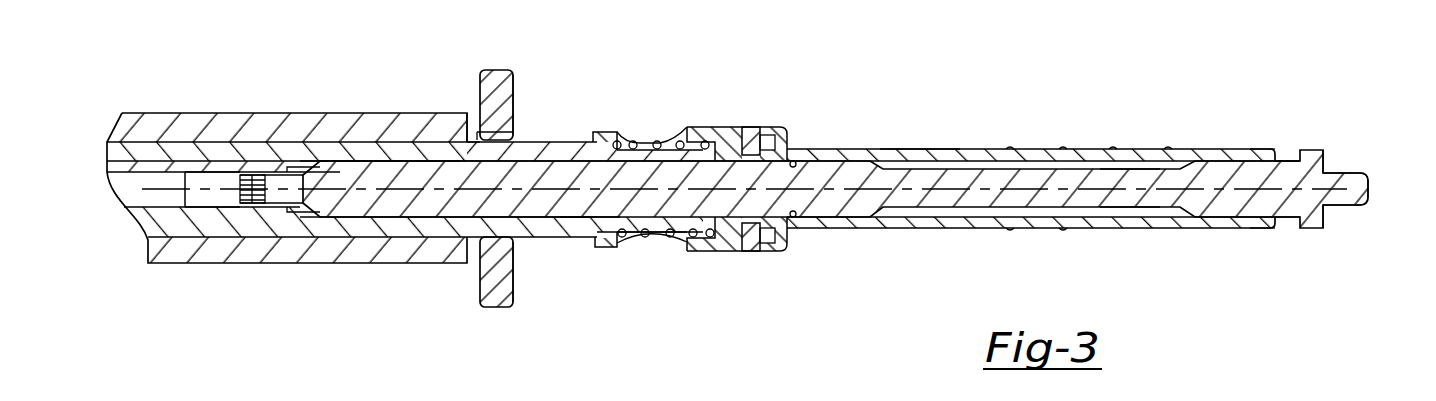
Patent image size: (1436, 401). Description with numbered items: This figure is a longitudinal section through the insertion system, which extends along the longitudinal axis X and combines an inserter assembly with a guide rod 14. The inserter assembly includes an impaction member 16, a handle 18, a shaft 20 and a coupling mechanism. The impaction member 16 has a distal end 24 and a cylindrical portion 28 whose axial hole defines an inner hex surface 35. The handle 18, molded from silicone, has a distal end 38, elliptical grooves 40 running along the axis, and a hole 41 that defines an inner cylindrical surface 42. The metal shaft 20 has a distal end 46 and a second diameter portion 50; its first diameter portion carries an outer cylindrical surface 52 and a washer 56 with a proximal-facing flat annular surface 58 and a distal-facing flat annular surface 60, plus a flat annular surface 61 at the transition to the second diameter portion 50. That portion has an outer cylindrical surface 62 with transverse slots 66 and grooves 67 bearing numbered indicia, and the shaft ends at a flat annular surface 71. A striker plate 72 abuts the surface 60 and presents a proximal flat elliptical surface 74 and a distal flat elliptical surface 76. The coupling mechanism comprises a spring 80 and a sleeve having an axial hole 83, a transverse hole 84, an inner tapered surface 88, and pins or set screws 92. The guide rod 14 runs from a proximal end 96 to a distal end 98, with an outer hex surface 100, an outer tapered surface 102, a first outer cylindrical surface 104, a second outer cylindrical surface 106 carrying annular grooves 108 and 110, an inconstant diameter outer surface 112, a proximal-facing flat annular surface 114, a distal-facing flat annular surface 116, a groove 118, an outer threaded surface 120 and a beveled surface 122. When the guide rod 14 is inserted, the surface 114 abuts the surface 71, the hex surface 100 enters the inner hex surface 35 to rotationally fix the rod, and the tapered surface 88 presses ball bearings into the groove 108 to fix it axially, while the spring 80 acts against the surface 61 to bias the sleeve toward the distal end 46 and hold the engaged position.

The guide rod 14 is at (594, 157).
The impaction member 16 is at (213, 156).
The handle 18 is at (231, 112).
The shaft 20 is at (248, 138).
The distal end 24 is at (334, 217).
The cylindrical portion 28 is at (150, 160).
The inner hex surface 35 is at (237, 190).
The distal end 38 is at (512, 257).
The elliptical grooves 40 is at (230, 112).
The hole 41 is at (415, 233).
The inner cylindrical surface 42 is at (432, 152).
The distal end 46 is at (1278, 150).
The second diameter portion 50 is at (972, 148).
The outer cylindrical surface 52 is at (310, 150).
The washer 56 is at (474, 122).
The flat annular surface 58 is at (462, 138).
The flat annular surface 60 is at (485, 133).
The flat annular surface 61 is at (617, 243).
The outer cylindrical surface 62 is at (915, 148).
The slots 66 is at (723, 157).
The grooves 67 is at (1010, 148).
The flat annular surface 71 is at (1278, 157).
The striker plate 72 is at (497, 70).
The flat elliptical surface 74 is at (480, 283).
The flat elliptical surface 76 is at (515, 82).
The spring 80 is at (657, 143).
The axial hole 83 is at (790, 240).
The hole 84 is at (678, 242).
The inner tapered surface 88 is at (787, 144).
The pins or set screws 92 is at (742, 127).
The proximal end 96 is at (250, 188).
The distal end 98 is at (1368, 188).
The outer hex surface 100 is at (283, 200).
The outer tapered surface 102 is at (318, 210).
The first outer cylindrical surface 104 is at (340, 170).
The second outer cylindrical surface 106 is at (592, 197).
The annular groove 108 is at (745, 222).
The annular groove 110 is at (792, 218).
The inconstant diameter outer surface 112 is at (1130, 175).
The flat annular surface 114 is at (1272, 218).
The flat annular surface 116 is at (1337, 217).
The groove 118 is at (1327, 173).
The outer threaded surface 120 is at (1363, 205).
The outer tapered or beveled surface 122 is at (1343, 170).
The longitudinal axis X is at (1232, 188).